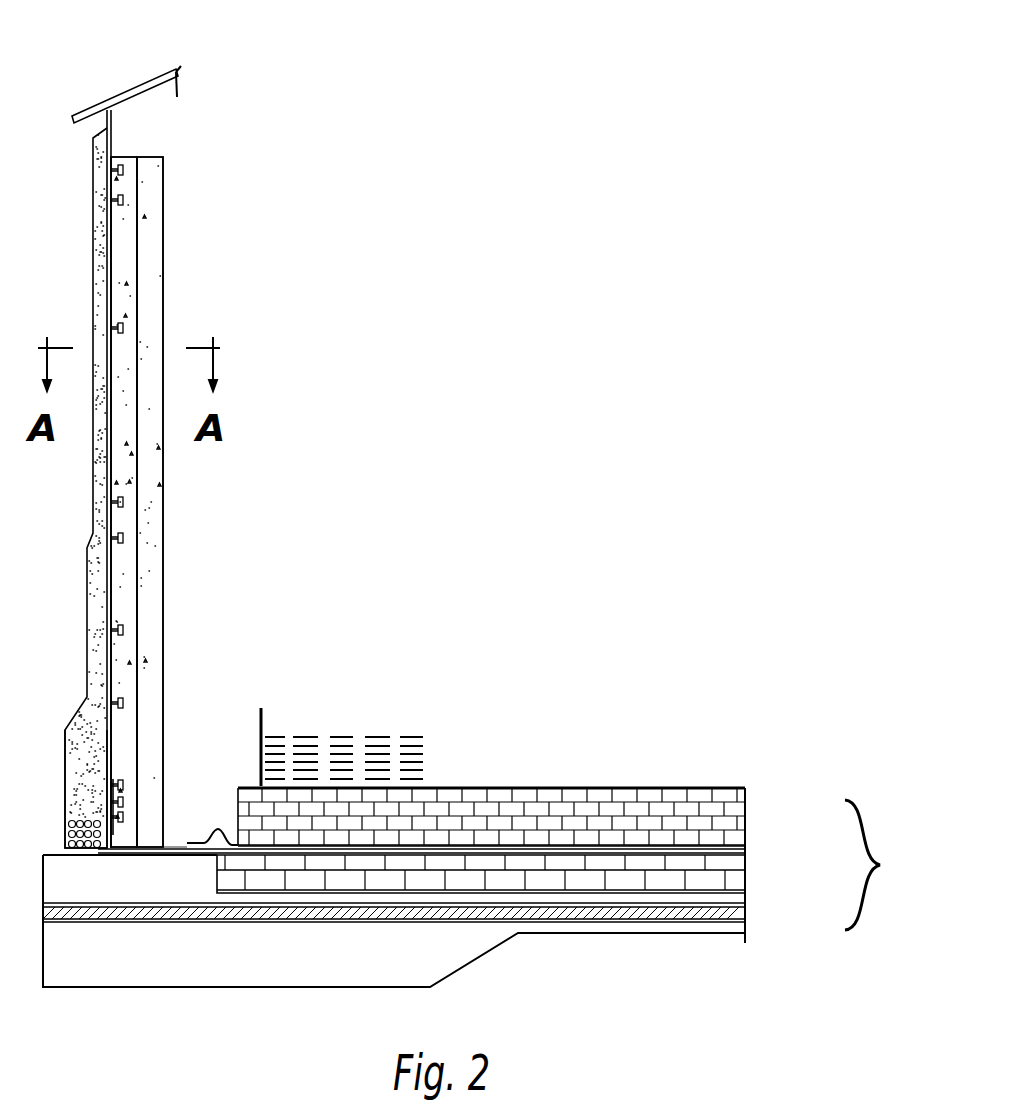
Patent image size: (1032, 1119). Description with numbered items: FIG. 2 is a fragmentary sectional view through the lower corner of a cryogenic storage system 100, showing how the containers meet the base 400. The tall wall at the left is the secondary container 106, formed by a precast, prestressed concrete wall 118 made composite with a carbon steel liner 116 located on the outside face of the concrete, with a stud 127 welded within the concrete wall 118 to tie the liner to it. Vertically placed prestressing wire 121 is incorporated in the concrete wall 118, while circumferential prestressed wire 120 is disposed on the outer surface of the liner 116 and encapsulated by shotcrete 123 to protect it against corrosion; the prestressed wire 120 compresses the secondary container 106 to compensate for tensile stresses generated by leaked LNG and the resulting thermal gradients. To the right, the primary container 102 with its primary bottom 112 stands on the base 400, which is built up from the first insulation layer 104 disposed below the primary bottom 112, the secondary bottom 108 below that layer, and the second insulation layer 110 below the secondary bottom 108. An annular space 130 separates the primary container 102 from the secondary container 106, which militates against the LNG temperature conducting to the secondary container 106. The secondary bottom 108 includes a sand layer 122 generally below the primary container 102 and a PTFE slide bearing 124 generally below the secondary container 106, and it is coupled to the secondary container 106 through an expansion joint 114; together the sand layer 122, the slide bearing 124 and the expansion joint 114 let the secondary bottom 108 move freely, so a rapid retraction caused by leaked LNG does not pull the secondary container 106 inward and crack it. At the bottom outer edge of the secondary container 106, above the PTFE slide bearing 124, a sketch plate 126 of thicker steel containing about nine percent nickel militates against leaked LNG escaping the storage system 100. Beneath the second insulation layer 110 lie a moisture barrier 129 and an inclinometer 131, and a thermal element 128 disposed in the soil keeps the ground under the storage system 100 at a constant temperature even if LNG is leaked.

The cryogenic storage system 100 is at (146, 46).
The primary container 102 is at (262, 717).
The first insulation layer 104 is at (718, 820).
The secondary container 106 is at (88, 622).
The secondary bottom 108 is at (628, 858).
The second insulation layer 110 is at (738, 877).
The primary bottom 112 is at (500, 786).
The expansion joint 114 is at (213, 845).
The carbon steel liner 116 is at (110, 420).
The concrete wall 118 is at (120, 290).
The prestressed wire 120 is at (65, 800).
The vertically placed prestressing wire 121 is at (147, 232).
The sand layer 122 is at (745, 851).
The shotcrete 123 is at (85, 735).
The PTFE slide bearing 124 is at (183, 853).
The sketch plate 126 is at (172, 843).
The stud 127 is at (120, 196).
The thermal element 128 is at (745, 905).
The moisture barrier 129 is at (577, 890).
The annular space 130 is at (220, 750).
The inclinometer 131 is at (632, 920).
The base 400 is at (890, 865).